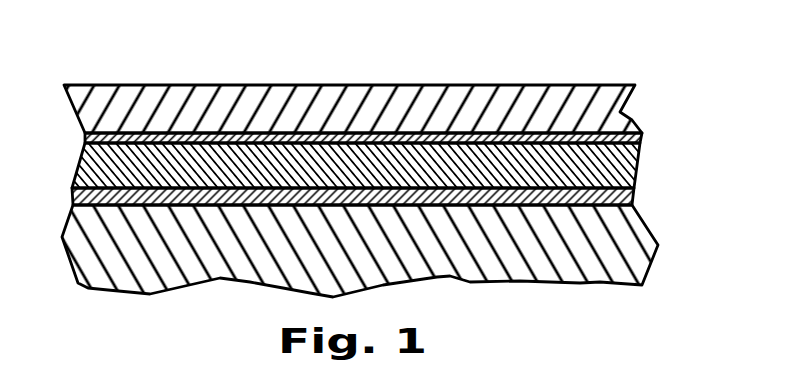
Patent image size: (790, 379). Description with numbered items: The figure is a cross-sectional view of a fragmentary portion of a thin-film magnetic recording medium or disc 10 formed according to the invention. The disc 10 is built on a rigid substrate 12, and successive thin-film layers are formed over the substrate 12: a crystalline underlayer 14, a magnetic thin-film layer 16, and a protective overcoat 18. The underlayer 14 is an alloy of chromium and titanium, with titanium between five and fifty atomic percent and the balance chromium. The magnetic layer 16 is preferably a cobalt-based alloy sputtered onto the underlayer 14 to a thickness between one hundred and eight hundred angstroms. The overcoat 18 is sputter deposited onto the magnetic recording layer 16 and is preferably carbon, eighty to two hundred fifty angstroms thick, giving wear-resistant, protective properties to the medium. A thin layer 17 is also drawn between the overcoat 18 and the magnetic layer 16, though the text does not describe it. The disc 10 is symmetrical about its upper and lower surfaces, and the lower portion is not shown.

The thin-film medium or disc 10 is at (395, 156).
The rigid substrate 12 is at (650, 247).
The crystalline underlayer 14 is at (625, 197).
The magnetic thin-film layer 16 is at (633, 166).
The adhesive layer 17 is at (638, 138).
The overcoat 18 is at (626, 109).